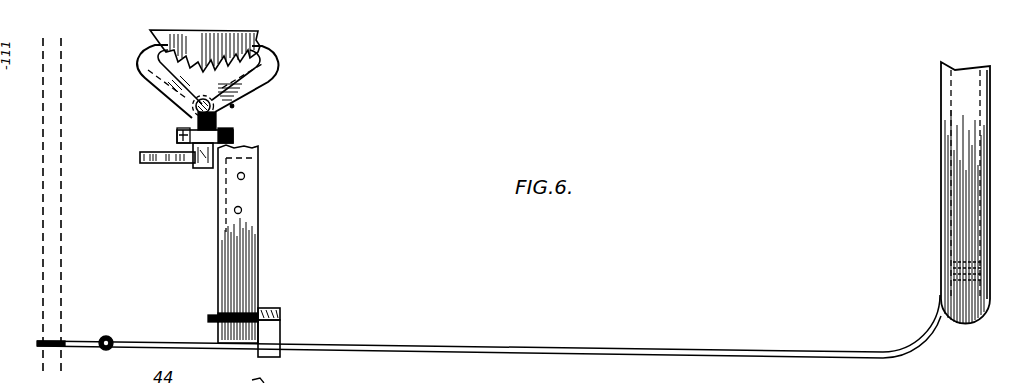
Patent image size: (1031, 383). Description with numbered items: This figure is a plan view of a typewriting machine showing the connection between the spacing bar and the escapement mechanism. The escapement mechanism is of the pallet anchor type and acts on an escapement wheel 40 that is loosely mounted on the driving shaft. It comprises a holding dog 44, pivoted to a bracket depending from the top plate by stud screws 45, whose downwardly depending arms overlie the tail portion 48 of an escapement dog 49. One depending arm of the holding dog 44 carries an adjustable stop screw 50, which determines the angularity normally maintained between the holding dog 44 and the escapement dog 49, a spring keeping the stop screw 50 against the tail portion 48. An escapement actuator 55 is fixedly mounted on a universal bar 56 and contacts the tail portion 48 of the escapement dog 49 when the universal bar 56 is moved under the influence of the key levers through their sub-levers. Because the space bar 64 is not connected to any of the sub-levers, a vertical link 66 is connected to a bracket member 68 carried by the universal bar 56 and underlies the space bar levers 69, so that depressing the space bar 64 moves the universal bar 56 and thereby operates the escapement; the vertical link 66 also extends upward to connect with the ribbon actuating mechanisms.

The escapement wheel 40 is at (150, 36).
The holding dog 44 is at (153, 82).
The escapement dog 49 is at (268, 82).
The stud screws 45 is at (192, 114).
The adjustable stop screw 50 is at (236, 135).
The tail portion 48 is at (203, 170).
The escapement actuator 55 is at (168, 166).
The universal bar 56 is at (252, 254).
The bracket member 68 is at (270, 307).
The vertical link 66 is at (281, 331).
The space bar levers 69 is at (532, 348).
The space bar 64 is at (973, 107).